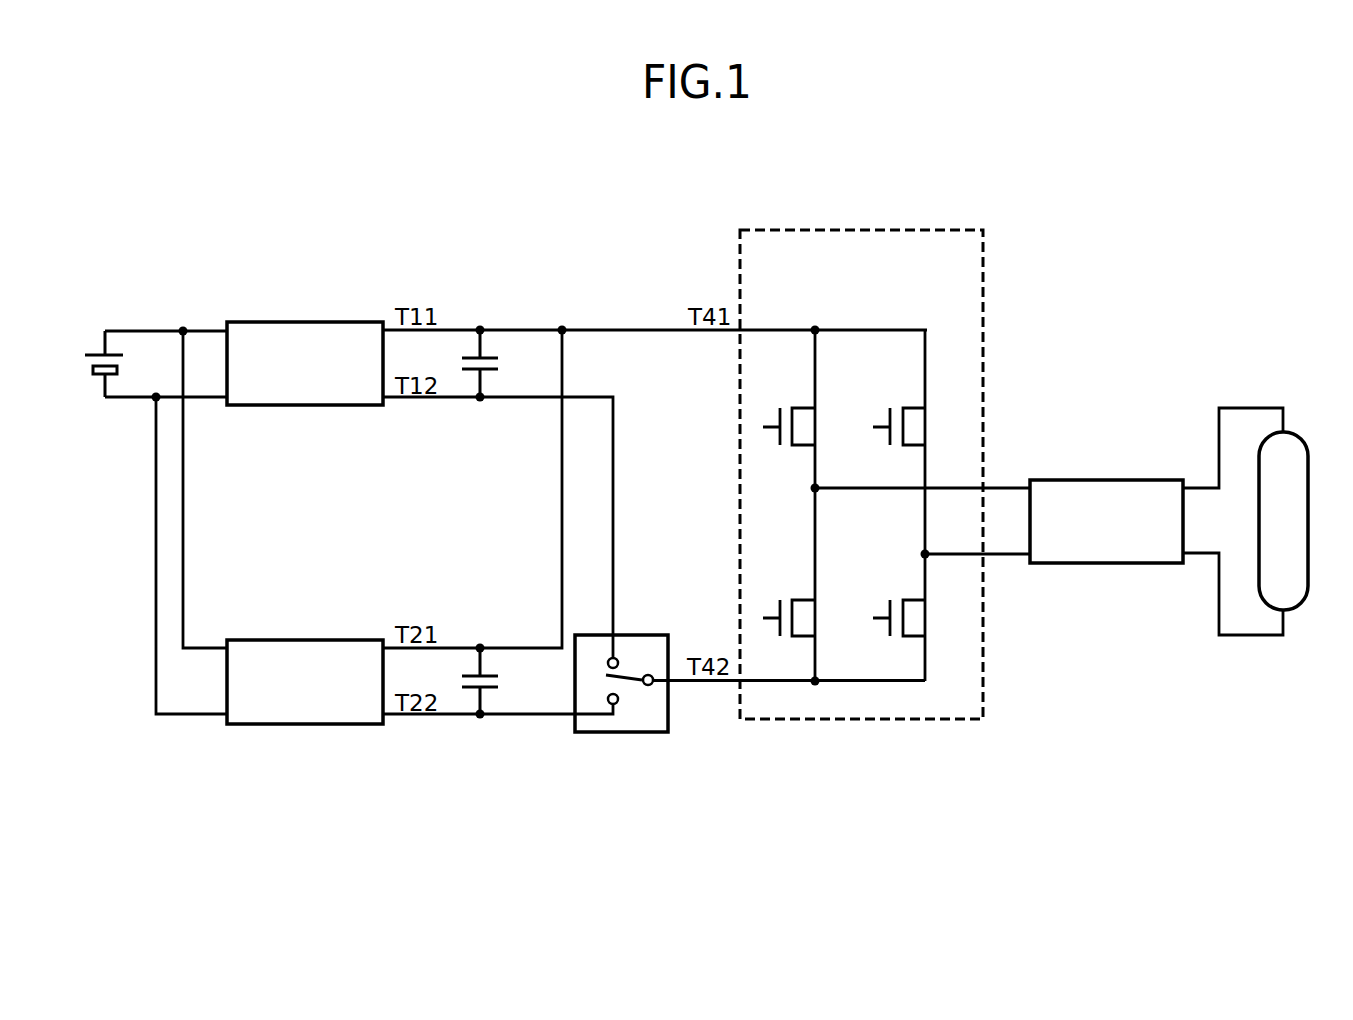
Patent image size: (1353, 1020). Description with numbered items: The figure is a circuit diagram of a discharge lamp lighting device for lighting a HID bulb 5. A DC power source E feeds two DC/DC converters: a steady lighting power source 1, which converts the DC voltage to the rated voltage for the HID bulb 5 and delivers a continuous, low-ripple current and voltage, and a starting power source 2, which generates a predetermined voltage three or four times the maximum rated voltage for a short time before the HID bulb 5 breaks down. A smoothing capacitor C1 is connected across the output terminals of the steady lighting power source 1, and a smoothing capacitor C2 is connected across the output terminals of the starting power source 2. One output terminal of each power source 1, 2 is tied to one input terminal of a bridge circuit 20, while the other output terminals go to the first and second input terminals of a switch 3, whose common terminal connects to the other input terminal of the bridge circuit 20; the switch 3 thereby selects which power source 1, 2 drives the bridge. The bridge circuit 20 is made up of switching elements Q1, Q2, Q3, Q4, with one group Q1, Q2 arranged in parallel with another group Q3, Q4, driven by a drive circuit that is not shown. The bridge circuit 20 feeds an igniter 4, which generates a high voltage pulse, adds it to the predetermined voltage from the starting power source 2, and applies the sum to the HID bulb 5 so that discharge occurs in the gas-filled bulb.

The steady lighting power source 1 is at (352, 323).
The starting power source 2 is at (352, 640).
The switch 3 is at (654, 735).
The igniter 4 is at (1149, 479).
The HID bulb 5 is at (1309, 506).
The bridge circuit 20 is at (895, 229).
The DC power source E is at (91, 364).
The smoothing capacitor C1 is at (501, 363).
The smoothing capacitor C2 is at (501, 681).
The switching element Q1 is at (808, 426).
The switching element Q2 is at (808, 618).
The switching element Q3 is at (918, 426).
The switching element Q4 is at (918, 618).